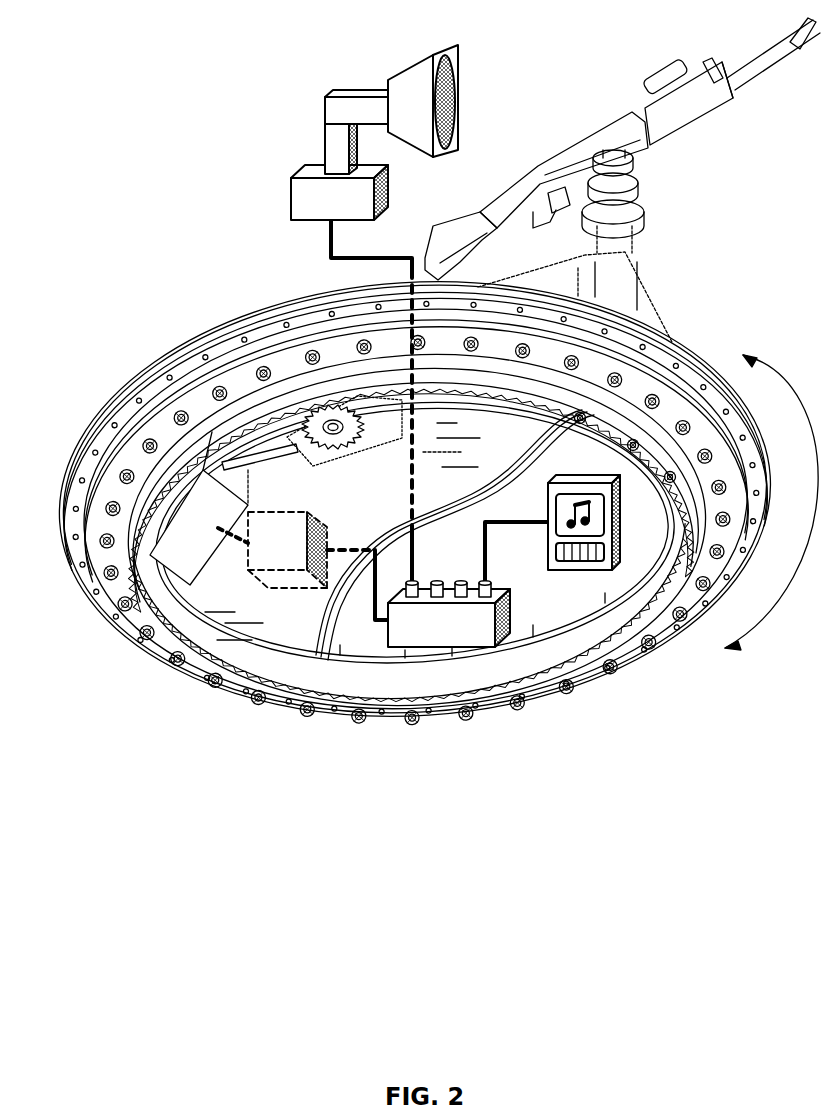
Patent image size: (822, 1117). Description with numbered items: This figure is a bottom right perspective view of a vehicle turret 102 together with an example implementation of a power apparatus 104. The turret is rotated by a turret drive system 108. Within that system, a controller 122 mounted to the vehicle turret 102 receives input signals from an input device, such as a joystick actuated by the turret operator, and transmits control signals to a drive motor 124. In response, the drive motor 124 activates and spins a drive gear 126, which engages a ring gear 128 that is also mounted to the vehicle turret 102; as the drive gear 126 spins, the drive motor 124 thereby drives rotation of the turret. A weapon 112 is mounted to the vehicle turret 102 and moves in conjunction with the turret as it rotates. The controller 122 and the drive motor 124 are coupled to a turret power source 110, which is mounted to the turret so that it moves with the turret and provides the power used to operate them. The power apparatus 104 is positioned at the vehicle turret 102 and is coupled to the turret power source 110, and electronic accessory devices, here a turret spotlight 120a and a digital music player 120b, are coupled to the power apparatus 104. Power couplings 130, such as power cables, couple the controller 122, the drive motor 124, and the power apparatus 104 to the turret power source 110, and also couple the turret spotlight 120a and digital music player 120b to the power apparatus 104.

The vehicle turret 102 is at (432, 502).
The power apparatus 104 is at (427, 640).
The turret drive system 108 is at (120, 358).
The turret power source 110 is at (290, 582).
The weapon 112 is at (600, 127).
The turret spotlight 120a is at (297, 205).
The digital music player 120b is at (583, 570).
The controller 122 is at (170, 520).
The drive motor 124 is at (293, 433).
The drive gear 126 is at (317, 417).
The ring gear 128 is at (137, 532).
The power couplings 130 is at (397, 249).